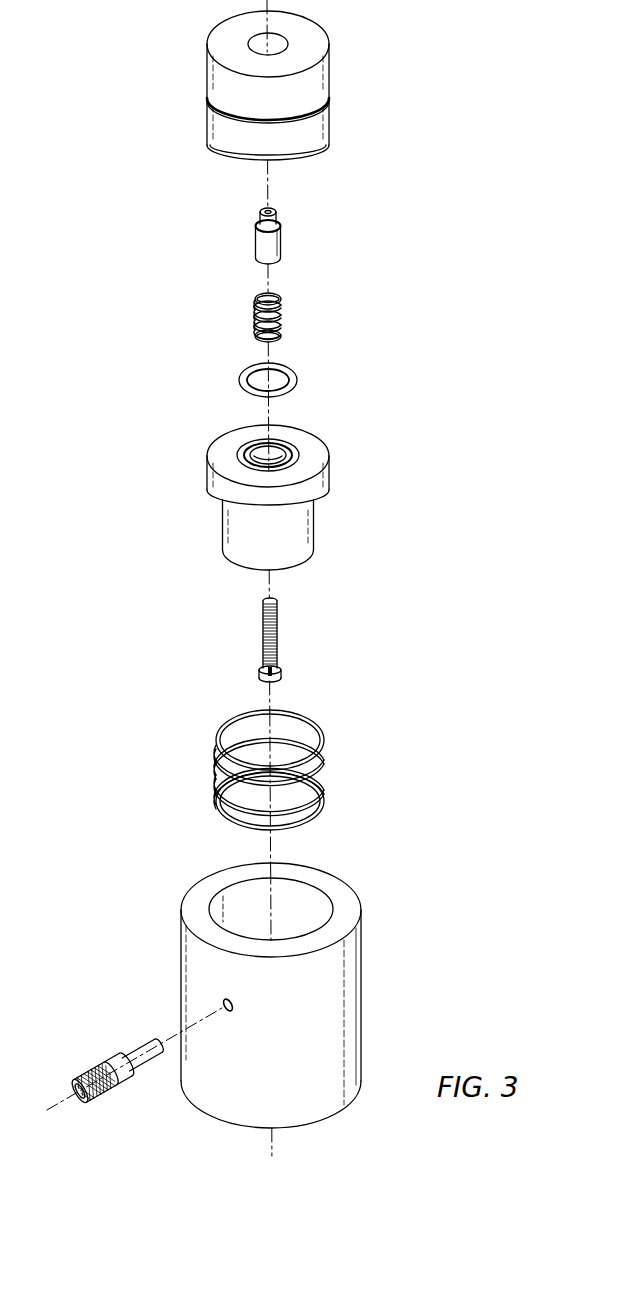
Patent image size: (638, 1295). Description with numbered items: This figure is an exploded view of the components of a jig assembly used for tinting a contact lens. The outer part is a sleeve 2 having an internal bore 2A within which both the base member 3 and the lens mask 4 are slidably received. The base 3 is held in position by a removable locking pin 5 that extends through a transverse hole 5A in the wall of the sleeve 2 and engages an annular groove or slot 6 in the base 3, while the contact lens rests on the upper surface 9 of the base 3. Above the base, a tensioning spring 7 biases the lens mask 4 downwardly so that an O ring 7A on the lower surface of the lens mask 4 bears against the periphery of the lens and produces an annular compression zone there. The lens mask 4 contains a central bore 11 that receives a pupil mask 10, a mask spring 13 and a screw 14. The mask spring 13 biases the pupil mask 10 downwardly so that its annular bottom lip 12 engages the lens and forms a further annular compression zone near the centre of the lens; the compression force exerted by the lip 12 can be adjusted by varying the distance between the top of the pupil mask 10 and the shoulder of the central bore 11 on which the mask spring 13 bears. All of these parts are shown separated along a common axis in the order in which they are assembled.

The sleeve 2 is at (362, 967).
The internal bore 2A is at (320, 907).
The base member 3 is at (323, 85).
The lens mask 4 is at (315, 535).
The locking pin 5 is at (92, 1070).
The transverse hole 5A is at (222, 1003).
The annular groove 6 is at (320, 106).
The tensioning spring 7 is at (320, 767).
The O ring 7A is at (296, 380).
The upper surface 9 is at (255, 160).
The pupil mask 10 is at (282, 238).
The central bore 11 is at (270, 458).
The annular bottom lip 12 is at (262, 212).
The mask spring 13 is at (282, 318).
The screw 14 is at (279, 642).